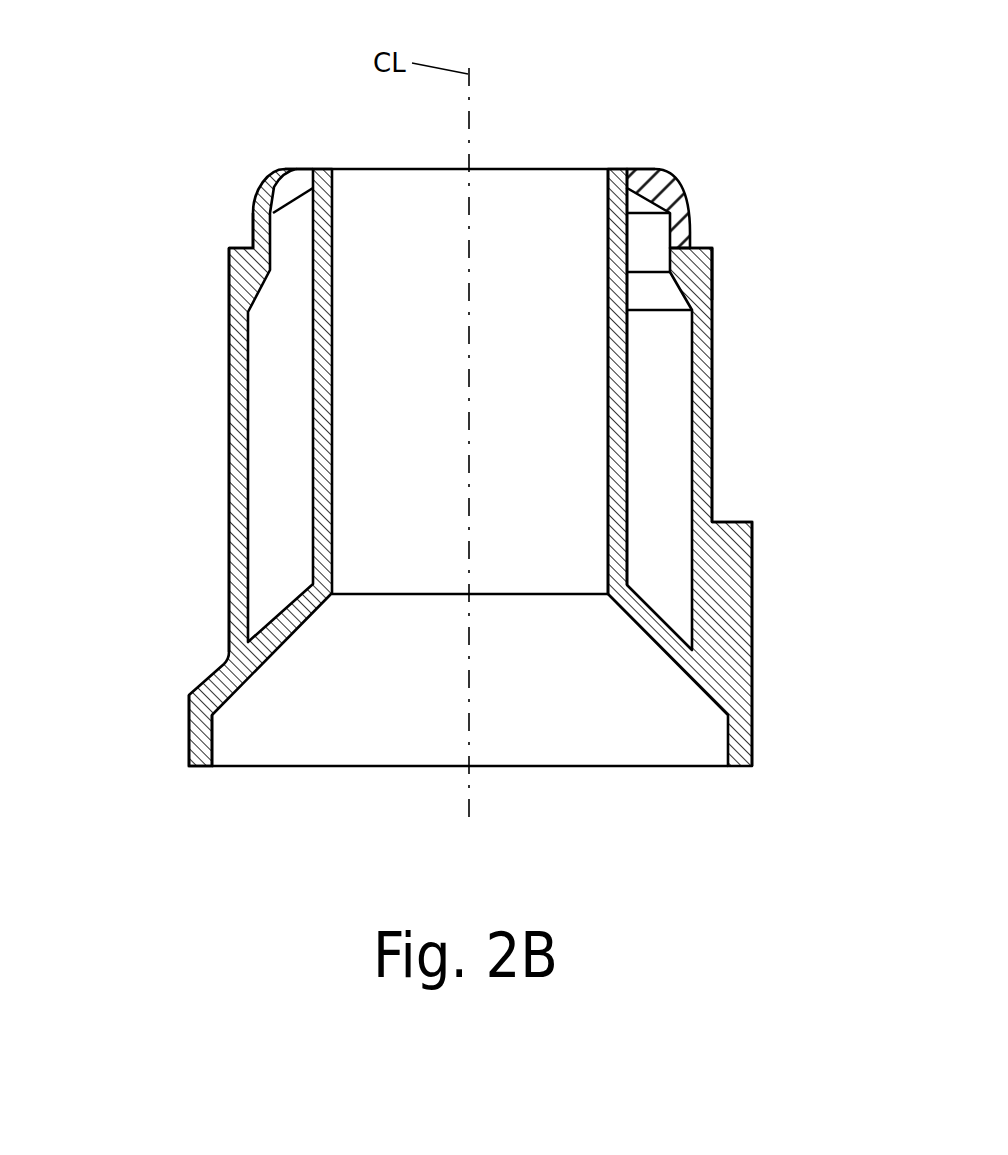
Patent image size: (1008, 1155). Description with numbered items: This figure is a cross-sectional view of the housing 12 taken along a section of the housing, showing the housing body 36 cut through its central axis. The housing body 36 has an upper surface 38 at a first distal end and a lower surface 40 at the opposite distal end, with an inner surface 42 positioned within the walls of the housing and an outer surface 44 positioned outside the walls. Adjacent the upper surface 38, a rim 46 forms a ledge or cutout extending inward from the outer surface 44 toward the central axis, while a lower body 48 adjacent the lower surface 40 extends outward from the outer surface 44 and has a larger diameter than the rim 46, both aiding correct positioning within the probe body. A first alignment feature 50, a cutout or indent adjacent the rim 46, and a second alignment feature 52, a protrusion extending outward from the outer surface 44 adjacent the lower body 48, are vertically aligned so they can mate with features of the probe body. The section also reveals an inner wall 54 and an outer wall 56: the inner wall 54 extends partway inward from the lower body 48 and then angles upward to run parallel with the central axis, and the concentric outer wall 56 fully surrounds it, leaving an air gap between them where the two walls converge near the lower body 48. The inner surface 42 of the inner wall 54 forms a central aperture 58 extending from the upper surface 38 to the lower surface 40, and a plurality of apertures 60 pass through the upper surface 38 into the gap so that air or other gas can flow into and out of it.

The housing 12 is at (152, 106).
The housing body 36 is at (226, 360).
The upper surface 38 is at (617, 170).
The lower surface 40 is at (742, 766).
The inner surface 42 is at (607, 502).
The outer surface 44 is at (227, 553).
The rim 46 is at (236, 247).
The lower body 48 is at (200, 730).
The first alignment feature 50 is at (690, 245).
The second alignment feature 52 is at (738, 573).
The inner wall 54 is at (618, 419).
The outer wall 56 is at (700, 345).
The central aperture 58 is at (395, 303).
The plurality of apertures 60 is at (297, 182).